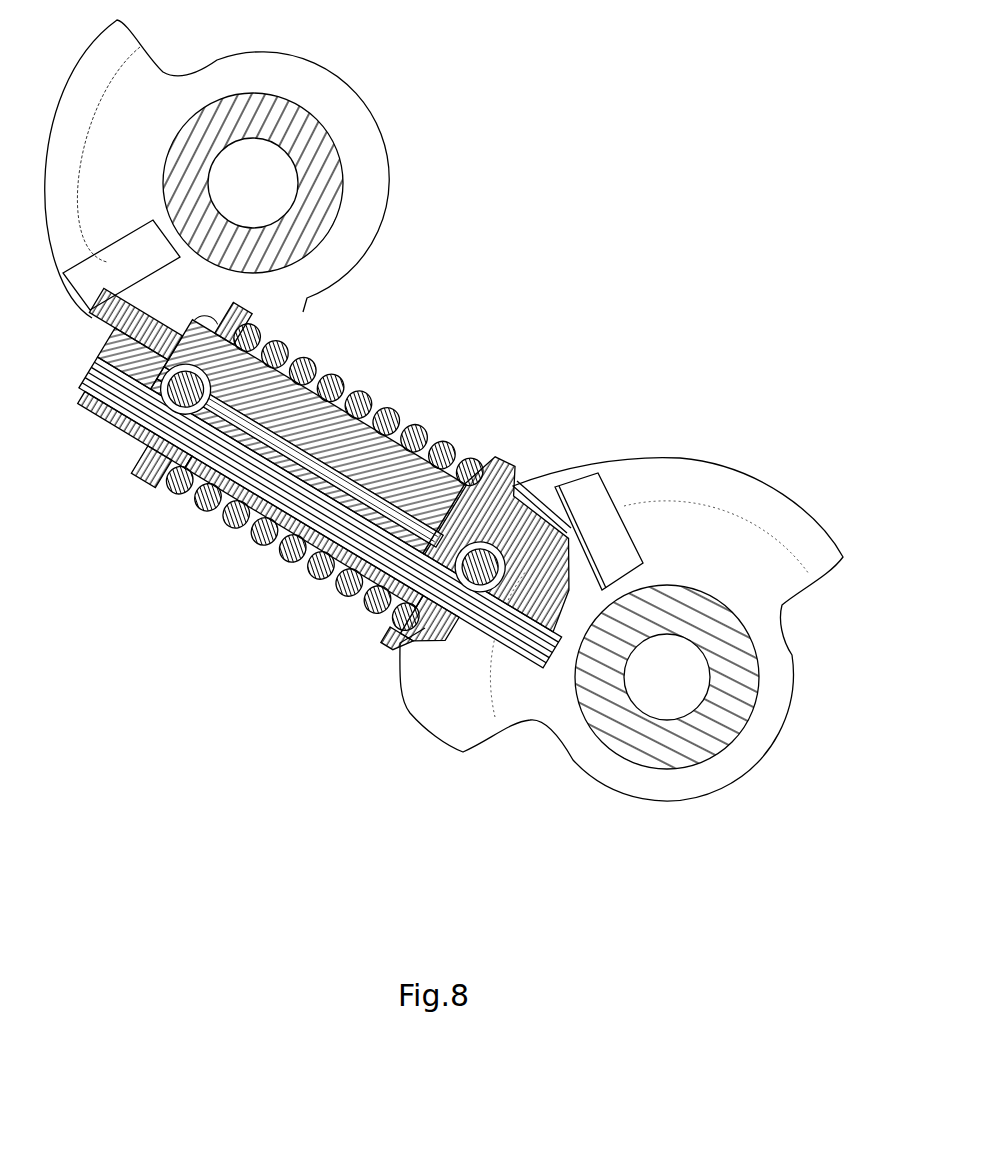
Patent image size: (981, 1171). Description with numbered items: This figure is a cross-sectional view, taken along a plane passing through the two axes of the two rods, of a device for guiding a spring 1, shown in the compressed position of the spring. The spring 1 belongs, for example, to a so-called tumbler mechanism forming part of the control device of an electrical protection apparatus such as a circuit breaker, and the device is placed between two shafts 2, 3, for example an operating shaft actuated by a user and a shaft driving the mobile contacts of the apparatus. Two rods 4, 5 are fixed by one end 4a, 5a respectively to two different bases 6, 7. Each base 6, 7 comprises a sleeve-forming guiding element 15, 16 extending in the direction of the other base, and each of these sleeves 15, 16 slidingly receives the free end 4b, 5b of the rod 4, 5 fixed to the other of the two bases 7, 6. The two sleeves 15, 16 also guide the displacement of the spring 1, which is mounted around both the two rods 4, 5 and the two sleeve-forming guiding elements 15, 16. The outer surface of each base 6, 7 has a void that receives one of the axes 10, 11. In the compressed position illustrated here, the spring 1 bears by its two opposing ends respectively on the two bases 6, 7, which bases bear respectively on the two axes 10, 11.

The spring 1 is at (398, 388).
The shaft 2 is at (253, 183).
The shaft 3 is at (666, 676).
The rod 4 is at (367, 393).
The end of rod 4a is at (303, 358).
The free end of rod 4b is at (513, 467).
The rod 5 is at (347, 530).
The end of rod 5a is at (418, 560).
The free end of rod 5b is at (173, 487).
The base 6 is at (243, 310).
The base 7 is at (400, 643).
The axis 10 is at (166, 381).
The axis 11 is at (478, 570).
The sleeve-forming guiding element 15 is at (423, 423).
The sleeve-forming guiding element 16 is at (243, 505).